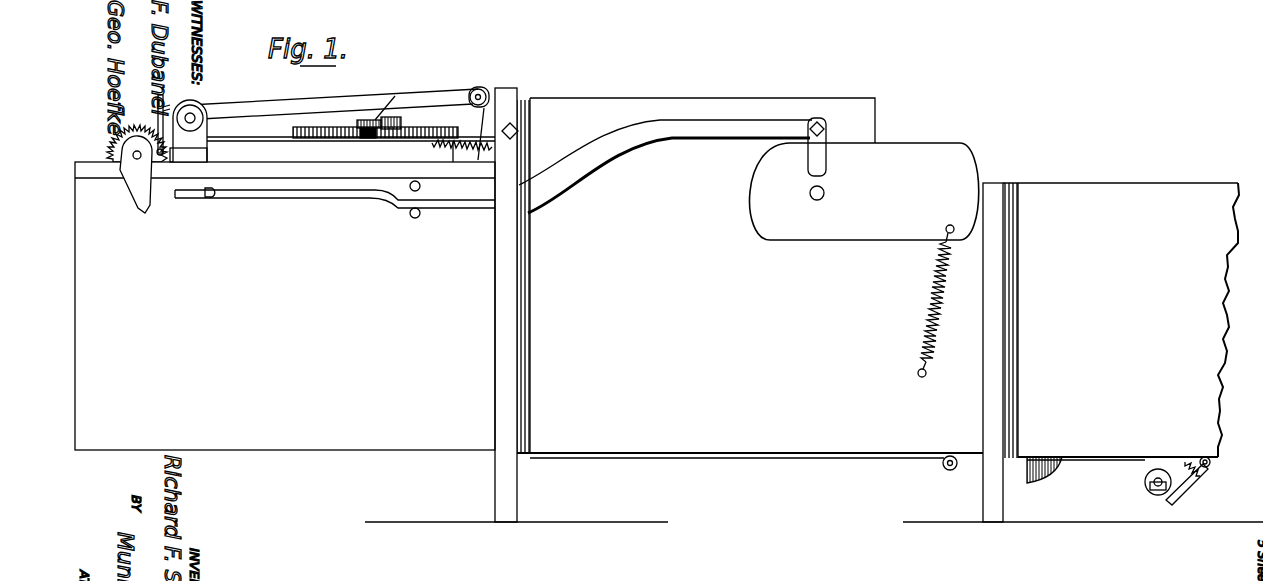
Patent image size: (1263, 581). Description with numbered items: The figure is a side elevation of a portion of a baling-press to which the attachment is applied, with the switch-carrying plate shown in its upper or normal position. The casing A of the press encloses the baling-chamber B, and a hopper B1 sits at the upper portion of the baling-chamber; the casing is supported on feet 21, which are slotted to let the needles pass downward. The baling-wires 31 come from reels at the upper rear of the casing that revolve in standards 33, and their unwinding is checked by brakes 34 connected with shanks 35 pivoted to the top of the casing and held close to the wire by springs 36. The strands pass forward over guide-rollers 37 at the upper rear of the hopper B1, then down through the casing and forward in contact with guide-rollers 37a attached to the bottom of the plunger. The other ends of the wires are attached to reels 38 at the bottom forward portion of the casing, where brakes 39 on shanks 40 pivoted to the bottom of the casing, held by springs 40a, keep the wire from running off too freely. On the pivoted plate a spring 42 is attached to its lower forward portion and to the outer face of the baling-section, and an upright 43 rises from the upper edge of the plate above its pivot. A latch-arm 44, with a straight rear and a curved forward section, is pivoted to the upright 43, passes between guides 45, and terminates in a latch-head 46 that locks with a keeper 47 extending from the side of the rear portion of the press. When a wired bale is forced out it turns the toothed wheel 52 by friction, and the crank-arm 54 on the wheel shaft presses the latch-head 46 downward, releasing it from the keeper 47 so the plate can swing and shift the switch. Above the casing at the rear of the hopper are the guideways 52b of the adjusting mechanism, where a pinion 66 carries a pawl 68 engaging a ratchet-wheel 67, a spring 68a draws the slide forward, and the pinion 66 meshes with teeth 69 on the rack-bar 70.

The casing A is at (657, 322).
The baling-chamber B is at (750, 382).
The hopper B1 is at (705, 102).
The feet 21 is at (513, 492).
The baling-wires 31 is at (372, 97).
The standards 33 is at (190, 131).
The brakes 34 is at (165, 95).
The shanks 35 is at (160, 123).
The springs 36 is at (188, 155).
The guide-rollers 37 is at (484, 88).
The guide-rollers 37a is at (942, 463).
The reels 38 is at (1143, 490).
The brakes 39 is at (1182, 498).
The shanks 40 is at (1210, 470).
The springs 40a is at (1190, 461).
The spring 42 is at (934, 300).
The upright 43 is at (827, 138).
The latch-arm 44 is at (601, 137).
The guides 45 is at (415, 218).
The latch-head 46 is at (208, 198).
The keeper 47 is at (214, 190).
The toothed wheel 52 is at (124, 136).
The guideways 52b is at (351, 149).
The crank-arm 54 is at (138, 200).
The pinion 66 is at (420, 136).
The ratchet-wheel 67 is at (387, 100).
The pawl 68 is at (398, 124).
The spring 68a is at (471, 143).
The teeth 69 is at (356, 120).
The rack-bar 70 is at (292, 130).